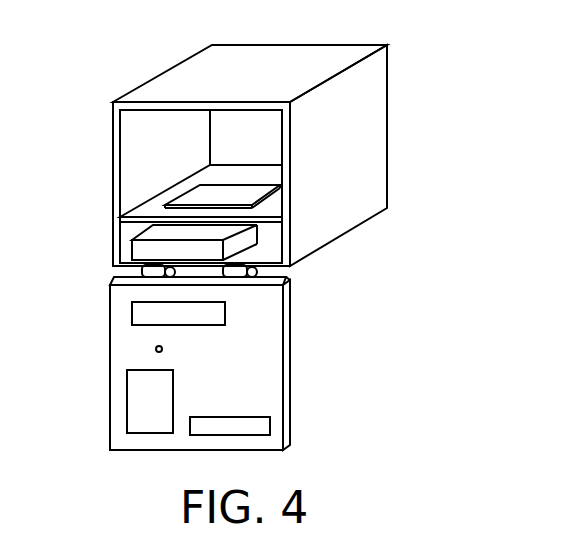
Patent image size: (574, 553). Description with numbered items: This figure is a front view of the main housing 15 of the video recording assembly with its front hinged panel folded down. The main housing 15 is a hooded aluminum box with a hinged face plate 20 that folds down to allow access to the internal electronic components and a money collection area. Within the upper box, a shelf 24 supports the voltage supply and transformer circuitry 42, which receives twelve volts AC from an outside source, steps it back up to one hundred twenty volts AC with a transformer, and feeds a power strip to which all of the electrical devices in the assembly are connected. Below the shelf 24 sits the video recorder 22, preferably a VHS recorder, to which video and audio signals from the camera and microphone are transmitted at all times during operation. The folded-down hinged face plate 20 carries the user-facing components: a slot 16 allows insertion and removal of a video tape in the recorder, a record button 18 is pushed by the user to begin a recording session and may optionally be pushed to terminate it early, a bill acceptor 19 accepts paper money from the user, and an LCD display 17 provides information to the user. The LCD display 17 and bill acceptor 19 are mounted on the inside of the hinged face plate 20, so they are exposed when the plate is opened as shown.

The main housing 15 is at (378, 122).
The shelf 24 is at (276, 212).
The voltage supply and transformer circuitry 42 is at (198, 198).
The video recorder 22 is at (133, 248).
The hinged face plate 20 is at (288, 310).
The slot 16 is at (133, 314).
The record button 18 is at (156, 348).
The bill acceptor 19 is at (127, 393).
The LCD display 17 is at (270, 424).